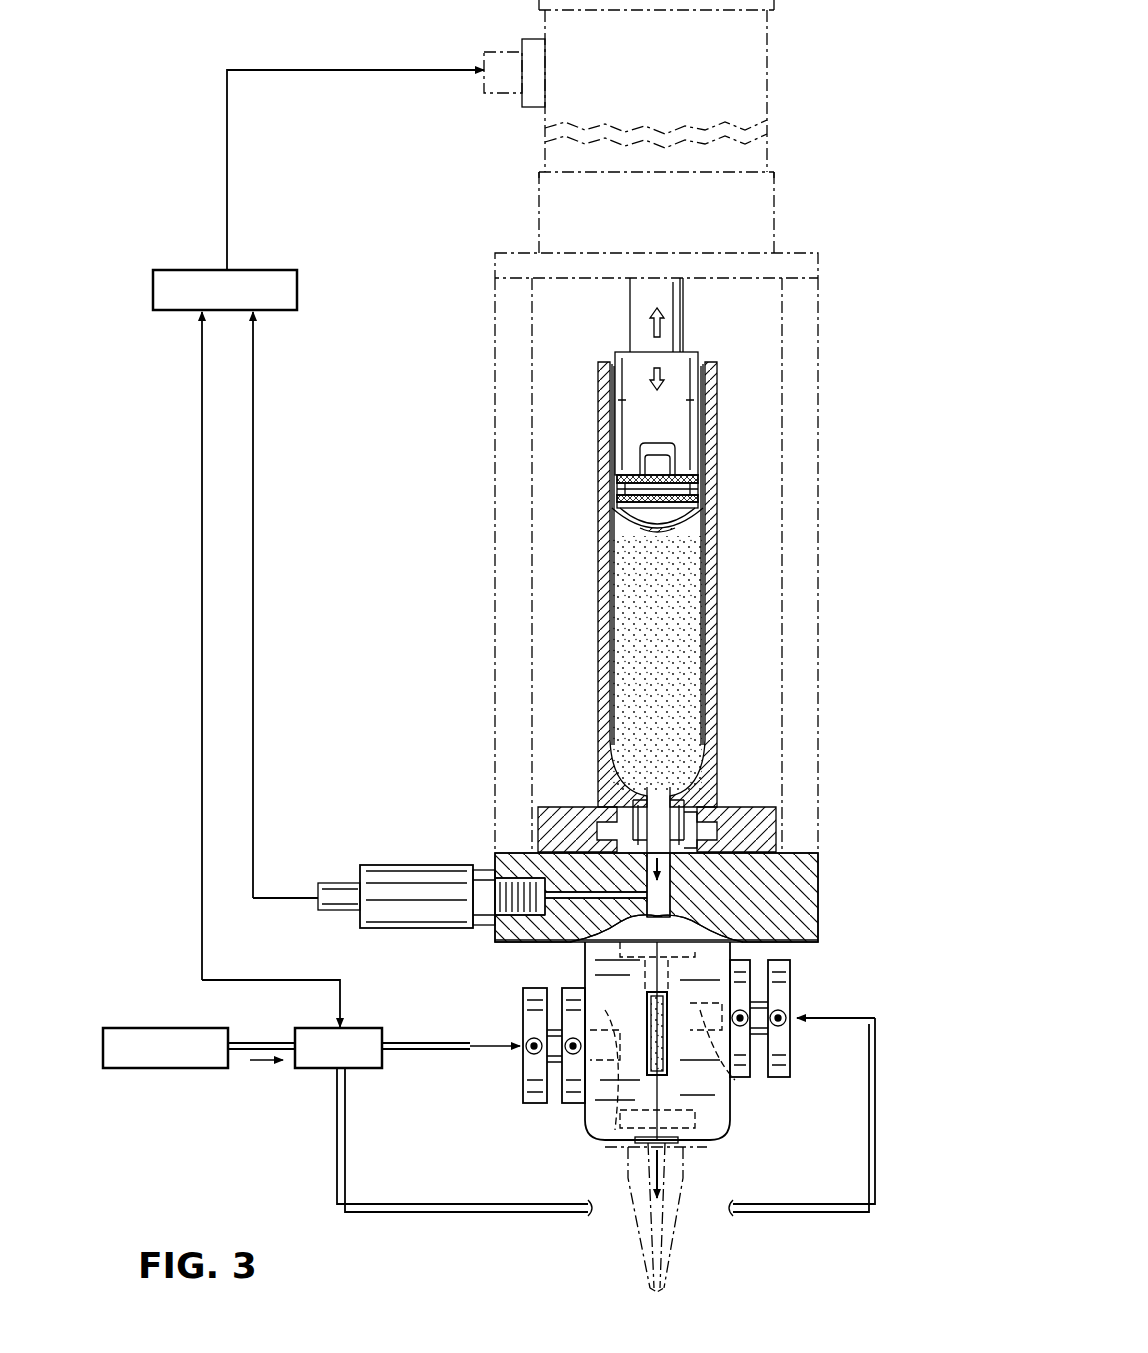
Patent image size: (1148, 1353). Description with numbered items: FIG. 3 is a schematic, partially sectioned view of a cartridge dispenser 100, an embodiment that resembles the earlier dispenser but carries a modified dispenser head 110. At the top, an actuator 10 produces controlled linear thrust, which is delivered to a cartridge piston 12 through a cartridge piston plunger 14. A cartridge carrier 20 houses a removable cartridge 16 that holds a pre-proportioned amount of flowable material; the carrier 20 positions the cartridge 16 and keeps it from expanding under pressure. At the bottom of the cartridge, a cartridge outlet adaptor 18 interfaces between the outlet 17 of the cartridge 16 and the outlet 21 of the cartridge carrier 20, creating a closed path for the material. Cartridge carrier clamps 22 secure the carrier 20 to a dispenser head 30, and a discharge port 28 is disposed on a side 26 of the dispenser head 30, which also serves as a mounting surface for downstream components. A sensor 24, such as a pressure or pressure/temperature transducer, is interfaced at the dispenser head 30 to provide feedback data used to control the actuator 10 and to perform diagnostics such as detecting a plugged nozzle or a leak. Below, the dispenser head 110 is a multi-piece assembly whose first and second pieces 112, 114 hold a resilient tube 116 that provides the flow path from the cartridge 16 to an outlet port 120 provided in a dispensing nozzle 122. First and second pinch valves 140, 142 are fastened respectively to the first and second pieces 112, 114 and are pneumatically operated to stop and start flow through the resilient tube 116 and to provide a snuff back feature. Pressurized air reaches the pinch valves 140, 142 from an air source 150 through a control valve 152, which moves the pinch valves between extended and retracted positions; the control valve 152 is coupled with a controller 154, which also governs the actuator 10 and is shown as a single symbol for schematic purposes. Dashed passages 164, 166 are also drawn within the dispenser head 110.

The actuator 10 is at (767, 55).
The cartridge dispenser 100 is at (840, 221).
The cartridge piston 12 is at (690, 512).
The cartridge piston plunger 14 is at (642, 515).
The cartridge 16 is at (712, 600).
The outlet of the cartridge 17 is at (677, 805).
The cartridge outlet adaptor 18 is at (718, 828).
The cartridge carrier 20 is at (598, 650).
The outlet of the cartridge carrier 21 is at (632, 805).
The cartridge carrier clamps 22 is at (538, 830).
The sensor 24 is at (392, 865).
The side of the dispenser head 26 is at (800, 942).
The discharge port 28 is at (690, 942).
The dispenser head 30 is at (818, 880).
The dispenser head 110 is at (583, 975).
The first piece 112 is at (728, 1113).
The second piece 114 is at (588, 1113).
The resilient tube 116 is at (647, 1025).
The outlet port 120 is at (652, 1290).
The dispensing nozzle 122 is at (672, 1220).
The first pinch valve 140 is at (790, 990).
The second pinch valve 142 is at (523, 1080).
The air source 150 is at (172, 1070).
The control valve 152 is at (322, 1070).
The controller 154 is at (180, 270).
The air passage 164 is at (740, 1090).
The air passage 166 is at (600, 1133).